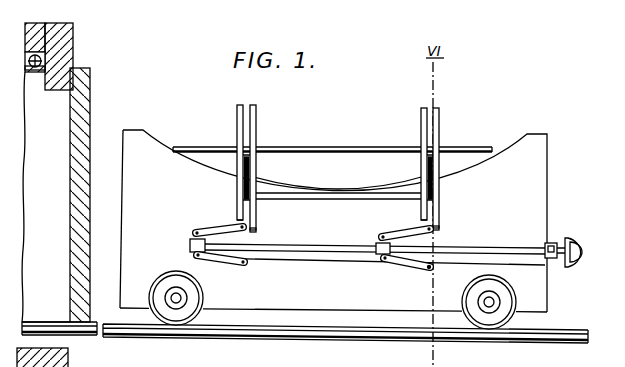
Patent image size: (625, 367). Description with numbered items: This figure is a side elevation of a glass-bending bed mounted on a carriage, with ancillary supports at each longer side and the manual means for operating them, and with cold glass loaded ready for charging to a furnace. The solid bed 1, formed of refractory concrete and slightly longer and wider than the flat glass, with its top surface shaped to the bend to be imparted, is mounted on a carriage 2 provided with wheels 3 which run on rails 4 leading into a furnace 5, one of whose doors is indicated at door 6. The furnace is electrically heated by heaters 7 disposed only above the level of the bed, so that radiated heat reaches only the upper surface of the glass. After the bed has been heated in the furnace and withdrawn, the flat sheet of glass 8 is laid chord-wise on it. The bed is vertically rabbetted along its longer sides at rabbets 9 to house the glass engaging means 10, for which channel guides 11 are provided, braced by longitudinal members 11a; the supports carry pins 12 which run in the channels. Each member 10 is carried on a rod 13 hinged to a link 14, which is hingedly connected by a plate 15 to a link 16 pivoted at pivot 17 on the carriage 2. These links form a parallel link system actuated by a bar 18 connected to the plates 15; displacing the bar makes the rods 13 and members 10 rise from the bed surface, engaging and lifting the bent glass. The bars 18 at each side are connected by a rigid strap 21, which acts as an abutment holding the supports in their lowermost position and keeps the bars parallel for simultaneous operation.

The bed 1 is at (531, 166).
The carriage 2 is at (257, 296).
The wheels 3 is at (491, 321).
The rails 4 is at (160, 328).
The furnace 5 is at (40, 107).
The door 6 is at (75, 136).
The heaters 7 is at (40, 60).
The sheet of glass 8 is at (320, 143).
The rabbets 9 is at (256, 213).
The glass engaging means 10 is at (248, 152).
The channel guides 11 is at (241, 157).
The longitudinal members 11a is at (333, 191).
The pins 12 is at (238, 197).
The rod 13 is at (435, 229).
The link 14 is at (405, 233).
The plate 15 is at (383, 255).
The link 16 is at (418, 266).
The pivot 17 is at (431, 267).
The bar 18 is at (482, 248).
The rigid strap 21 is at (560, 244).